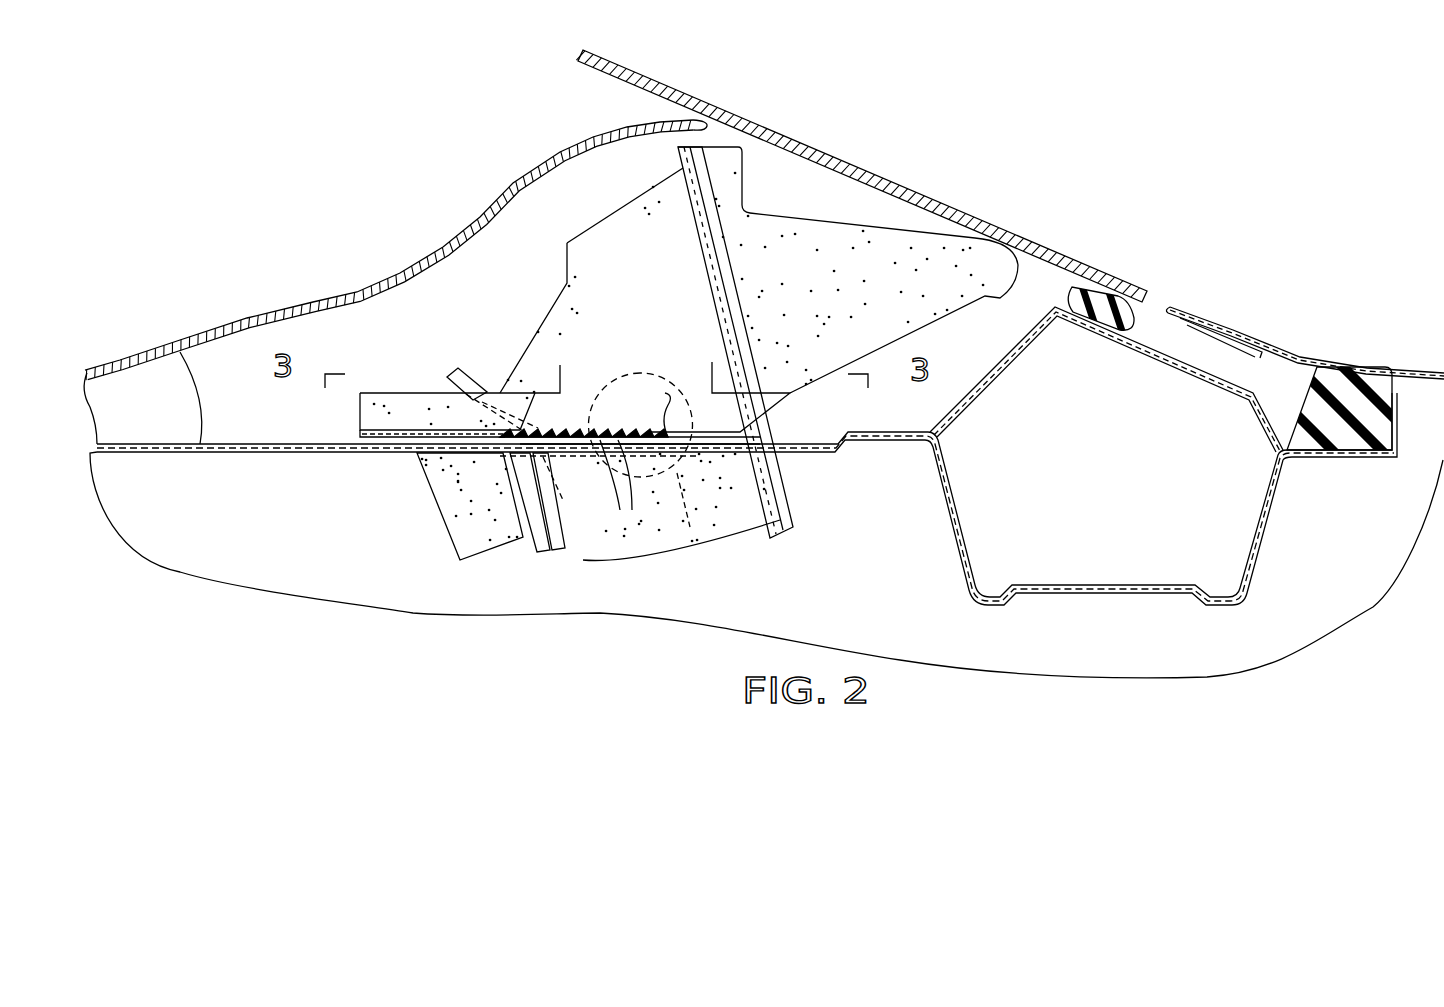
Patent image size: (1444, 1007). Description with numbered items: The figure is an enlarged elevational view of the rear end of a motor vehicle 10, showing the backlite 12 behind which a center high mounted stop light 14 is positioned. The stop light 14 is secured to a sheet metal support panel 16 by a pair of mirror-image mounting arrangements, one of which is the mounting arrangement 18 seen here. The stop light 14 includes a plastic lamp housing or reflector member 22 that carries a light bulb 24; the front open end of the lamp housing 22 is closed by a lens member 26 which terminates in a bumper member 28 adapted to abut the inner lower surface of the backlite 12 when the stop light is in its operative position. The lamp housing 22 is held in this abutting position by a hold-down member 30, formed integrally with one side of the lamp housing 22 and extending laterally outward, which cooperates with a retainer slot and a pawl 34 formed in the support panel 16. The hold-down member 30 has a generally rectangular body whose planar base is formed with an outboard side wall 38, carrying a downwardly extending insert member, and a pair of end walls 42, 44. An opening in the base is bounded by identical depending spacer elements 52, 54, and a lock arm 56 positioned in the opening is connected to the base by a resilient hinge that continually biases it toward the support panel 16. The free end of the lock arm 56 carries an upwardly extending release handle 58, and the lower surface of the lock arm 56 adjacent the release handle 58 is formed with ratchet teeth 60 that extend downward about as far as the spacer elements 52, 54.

The motor vehicle 10 is at (1184, 285).
The backlite 12 is at (665, 86).
The center high mounted stop light 14 is at (396, 215).
The sheet metal support panel 16 is at (172, 348).
The mounting arrangement 18 is at (544, 372).
The lamp housing 22 is at (627, 288).
The light bulb 24 is at (707, 543).
The lens member 26 is at (800, 263).
The bumper member 28 is at (1040, 252).
The hold-down member 30 is at (380, 384).
The pawl 34 is at (597, 453).
The outboard side wall 38 is at (404, 368).
The end wall 42 is at (360, 410).
The end wall 44 is at (770, 407).
The spacer element 52 is at (687, 457).
The spacer element 54 is at (365, 445).
The lock arm 56 is at (620, 420).
The release handle 58 is at (466, 380).
The ratchet teeth 60 is at (624, 491).